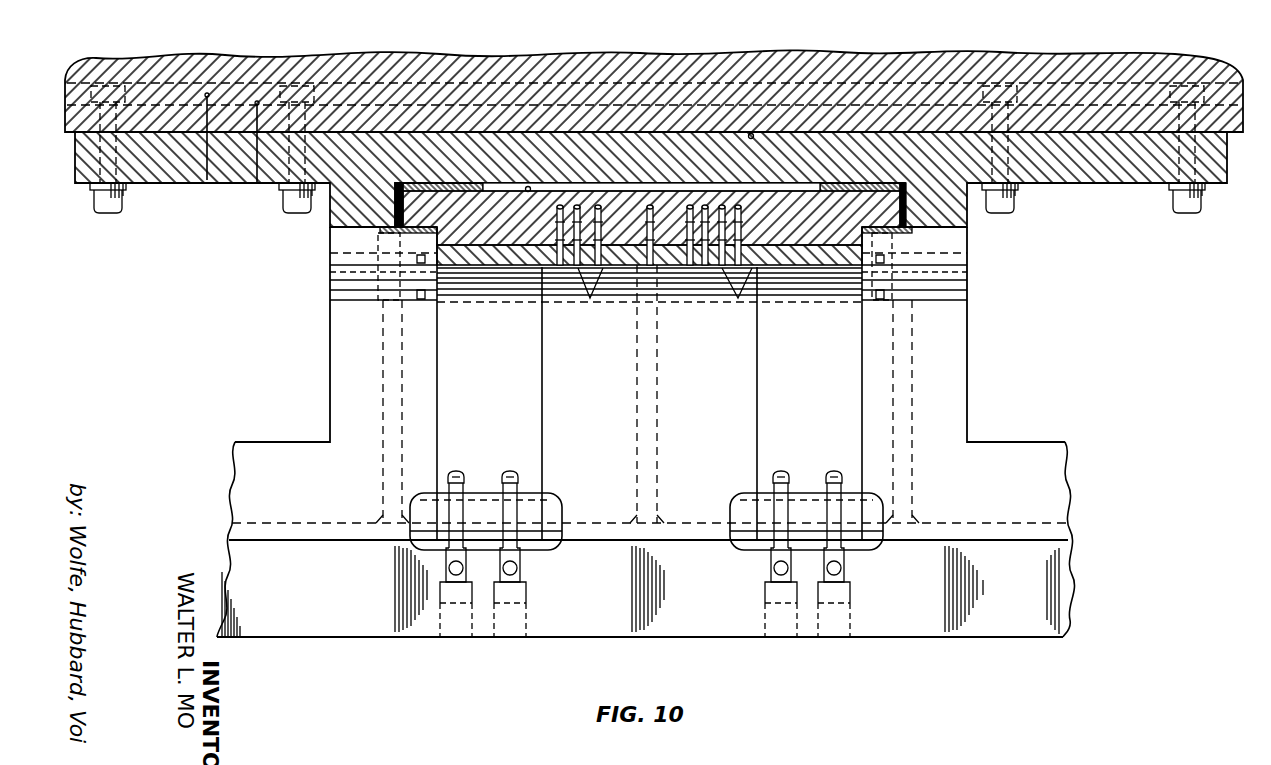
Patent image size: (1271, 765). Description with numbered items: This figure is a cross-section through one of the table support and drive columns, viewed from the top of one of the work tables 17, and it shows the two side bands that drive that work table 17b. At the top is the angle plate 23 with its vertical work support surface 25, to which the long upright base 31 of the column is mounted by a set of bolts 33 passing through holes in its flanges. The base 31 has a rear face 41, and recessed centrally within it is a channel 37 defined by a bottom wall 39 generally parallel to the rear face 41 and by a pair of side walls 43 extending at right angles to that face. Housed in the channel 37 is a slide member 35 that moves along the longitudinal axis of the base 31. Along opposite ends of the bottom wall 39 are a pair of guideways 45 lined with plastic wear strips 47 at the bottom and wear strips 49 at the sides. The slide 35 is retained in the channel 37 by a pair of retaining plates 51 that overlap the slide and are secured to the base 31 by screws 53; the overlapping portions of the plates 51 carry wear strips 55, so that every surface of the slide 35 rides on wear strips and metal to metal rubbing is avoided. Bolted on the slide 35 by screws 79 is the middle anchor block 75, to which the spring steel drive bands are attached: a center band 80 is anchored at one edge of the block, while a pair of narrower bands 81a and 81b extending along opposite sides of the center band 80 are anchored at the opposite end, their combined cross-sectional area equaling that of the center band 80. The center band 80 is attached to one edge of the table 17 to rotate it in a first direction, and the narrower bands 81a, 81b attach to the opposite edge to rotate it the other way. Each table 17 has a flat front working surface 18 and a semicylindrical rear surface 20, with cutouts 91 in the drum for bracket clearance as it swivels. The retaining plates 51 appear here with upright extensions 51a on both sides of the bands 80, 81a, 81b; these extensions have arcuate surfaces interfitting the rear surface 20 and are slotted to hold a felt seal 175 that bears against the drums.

The work table 17 is at (897, 665).
The work table 17b is at (732, 640).
The front working surface 18 is at (358, 638).
The cylindrical rear surface 20 is at (207, 180).
The angle plate 23 is at (585, 52).
The work support surface 25 is at (751, 134).
The base 31 is at (176, 184).
The bolts 33 is at (104, 213).
The slide member 35 is at (488, 225).
The channel 37 is at (665, 191).
The bottom wall 39 is at (528, 186).
The rear face 41 is at (257, 183).
The side walls 43 is at (385, 219).
The guideways 45 is at (405, 183).
The plastic wear strips 47 is at (458, 183).
The wear strips 49 is at (395, 260).
The retaining plates 51 is at (330, 232).
The upright extensions 51a is at (415, 312).
The screws 53 is at (330, 284).
The wear strips 55 is at (398, 312).
The middle anchor block 75 is at (524, 258).
The screws 79 is at (589, 297).
The center drive band 80 is at (623, 285).
The narrower drive band 81a is at (542, 398).
The narrower drive band 81b is at (728, 392).
The cutouts 91 is at (330, 400).
The felt seal 175 is at (421, 312).